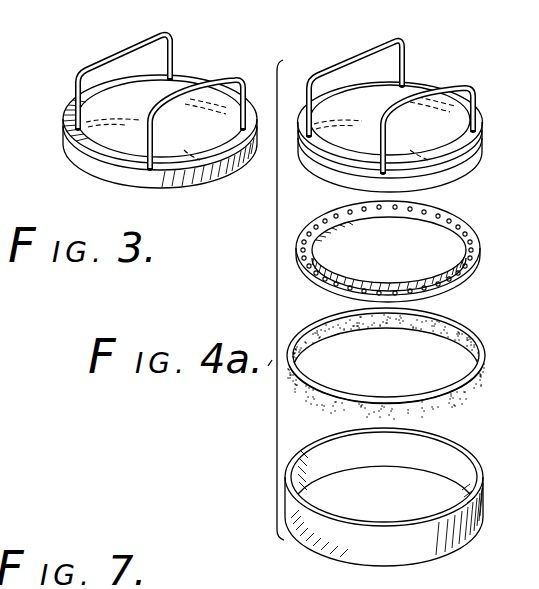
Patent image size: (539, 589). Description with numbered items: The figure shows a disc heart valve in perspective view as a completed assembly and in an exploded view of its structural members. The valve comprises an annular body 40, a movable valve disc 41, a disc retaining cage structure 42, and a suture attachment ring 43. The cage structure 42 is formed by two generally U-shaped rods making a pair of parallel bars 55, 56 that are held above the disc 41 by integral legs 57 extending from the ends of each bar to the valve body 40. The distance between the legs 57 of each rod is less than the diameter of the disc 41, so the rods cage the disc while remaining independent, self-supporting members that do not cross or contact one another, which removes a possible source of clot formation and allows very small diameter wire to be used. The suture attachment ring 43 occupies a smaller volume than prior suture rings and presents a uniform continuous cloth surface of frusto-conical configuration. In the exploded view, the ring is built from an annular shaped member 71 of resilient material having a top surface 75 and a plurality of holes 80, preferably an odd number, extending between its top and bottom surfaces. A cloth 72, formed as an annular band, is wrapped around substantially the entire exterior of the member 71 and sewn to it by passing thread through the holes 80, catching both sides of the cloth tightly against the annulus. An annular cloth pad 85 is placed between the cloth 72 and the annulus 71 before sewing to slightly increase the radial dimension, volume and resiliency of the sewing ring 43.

In FIG. 3, the annular body 40 is at (86, 152).
In FIG. 4A, the annular body 40 is at (484, 160).
In FIG. 3, the movable valve disc 41 is at (98, 137).
In FIG. 4A, the movable valve disc 41 is at (410, 93).
In FIG. 3, the disc retaining cage structure 42 is at (104, 43).
In FIG. 4A, the disc retaining cage structure 42 is at (368, 38).
In FIG. 3, the suture attachment ring 43 is at (86, 171).
In FIG. 3, the parallel bar 55 is at (110, 53).
In FIG. 4A, the parallel bar 55 is at (347, 50).
In FIG. 3, the parallel bar 56 is at (211, 82).
In FIG. 4A, the parallel bar 56 is at (452, 80).
In FIG. 3, the integral legs 57 is at (75, 89).
In FIG. 4A, the integral legs 57 is at (310, 92).
In FIG. 4A, the annular shaped member 71 is at (465, 278).
In FIG. 3, the cloth 72 is at (213, 178).
In FIG. 4A, the cloth 72 is at (480, 513).
In FIG. 4A, the top surface 75 is at (412, 246).
In FIG. 4A, the holes 80 is at (318, 202).
In FIG. 4A, the annular cloth pad 85 is at (481, 392).